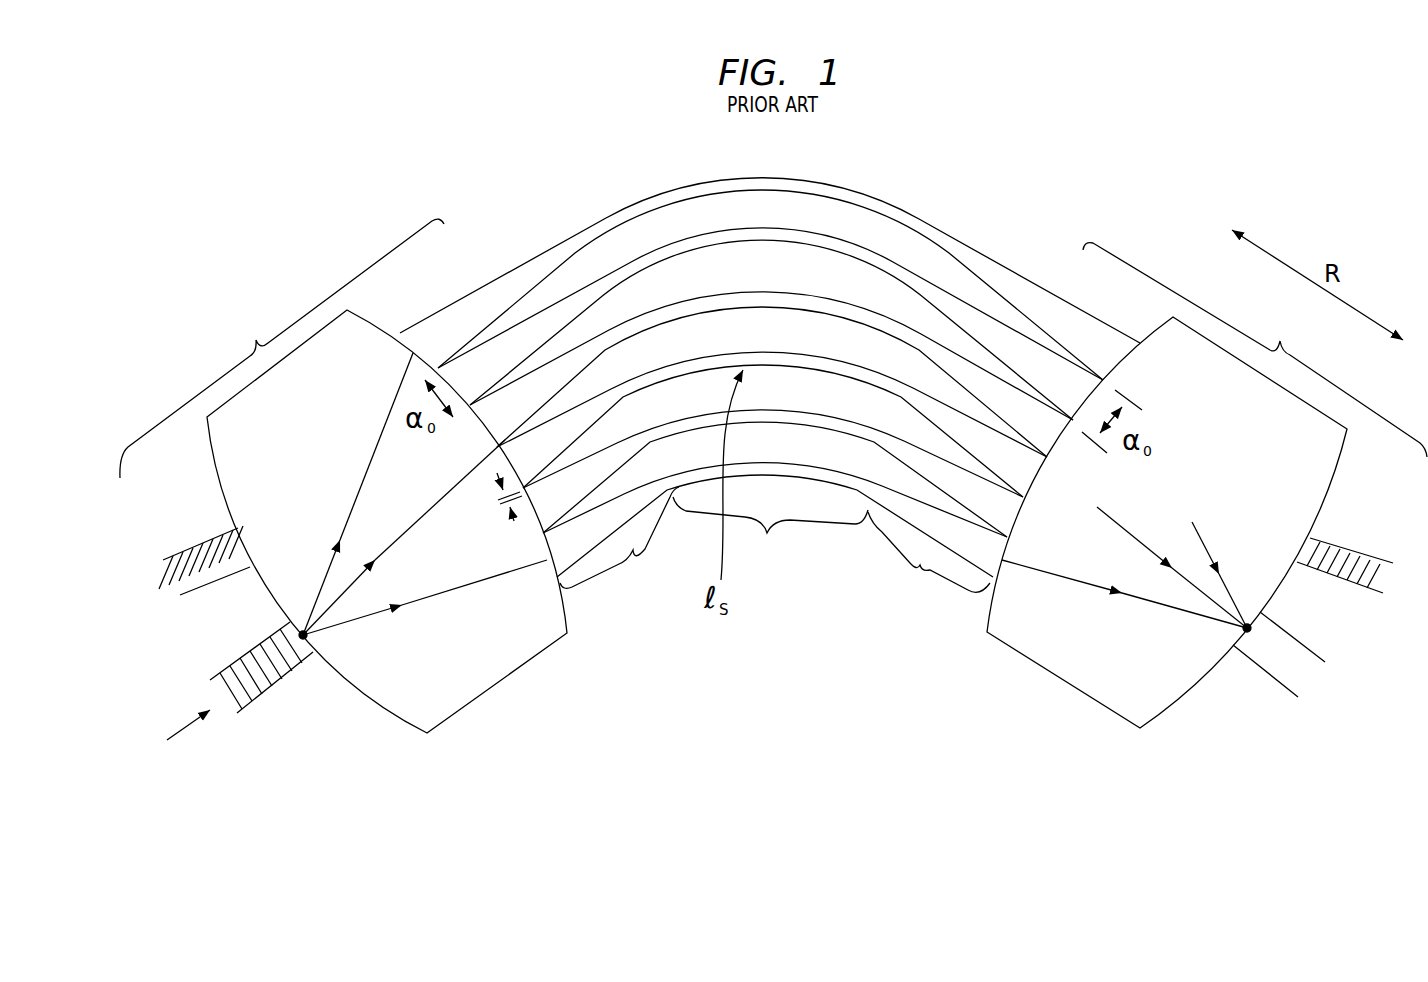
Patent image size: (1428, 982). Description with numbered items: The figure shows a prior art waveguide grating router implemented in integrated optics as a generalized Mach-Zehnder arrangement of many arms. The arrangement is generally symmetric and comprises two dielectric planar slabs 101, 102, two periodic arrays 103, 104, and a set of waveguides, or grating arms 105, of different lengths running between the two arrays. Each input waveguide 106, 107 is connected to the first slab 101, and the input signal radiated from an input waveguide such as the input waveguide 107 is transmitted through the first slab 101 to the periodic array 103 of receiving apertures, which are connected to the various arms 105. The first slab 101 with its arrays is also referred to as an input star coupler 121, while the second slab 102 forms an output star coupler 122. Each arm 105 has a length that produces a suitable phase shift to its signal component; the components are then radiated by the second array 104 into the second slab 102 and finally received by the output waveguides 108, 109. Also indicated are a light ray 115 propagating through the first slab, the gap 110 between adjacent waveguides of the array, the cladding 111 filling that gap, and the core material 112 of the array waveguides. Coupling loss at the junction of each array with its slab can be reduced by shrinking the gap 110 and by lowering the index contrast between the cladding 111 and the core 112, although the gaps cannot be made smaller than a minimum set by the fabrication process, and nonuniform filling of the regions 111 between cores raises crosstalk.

The first dielectric planar slab 101 is at (485, 672).
The second dielectric planar slab 102 is at (1073, 670).
The first periodic array 103 is at (619, 544).
The second periodic array 104 is at (929, 560).
The grating arms 105 is at (770, 531).
The input waveguide 106 is at (200, 548).
The input waveguide 107 is at (252, 657).
The output waveguide 108 is at (1300, 652).
The output waveguide 109 is at (1343, 552).
The gap 110 is at (515, 509).
The cladding 111 is at (770, 377).
The core material 112 is at (772, 409).
The light ray 115 is at (403, 536).
The input star coupler 121 is at (282, 348).
The output star coupler 122 is at (1255, 350).